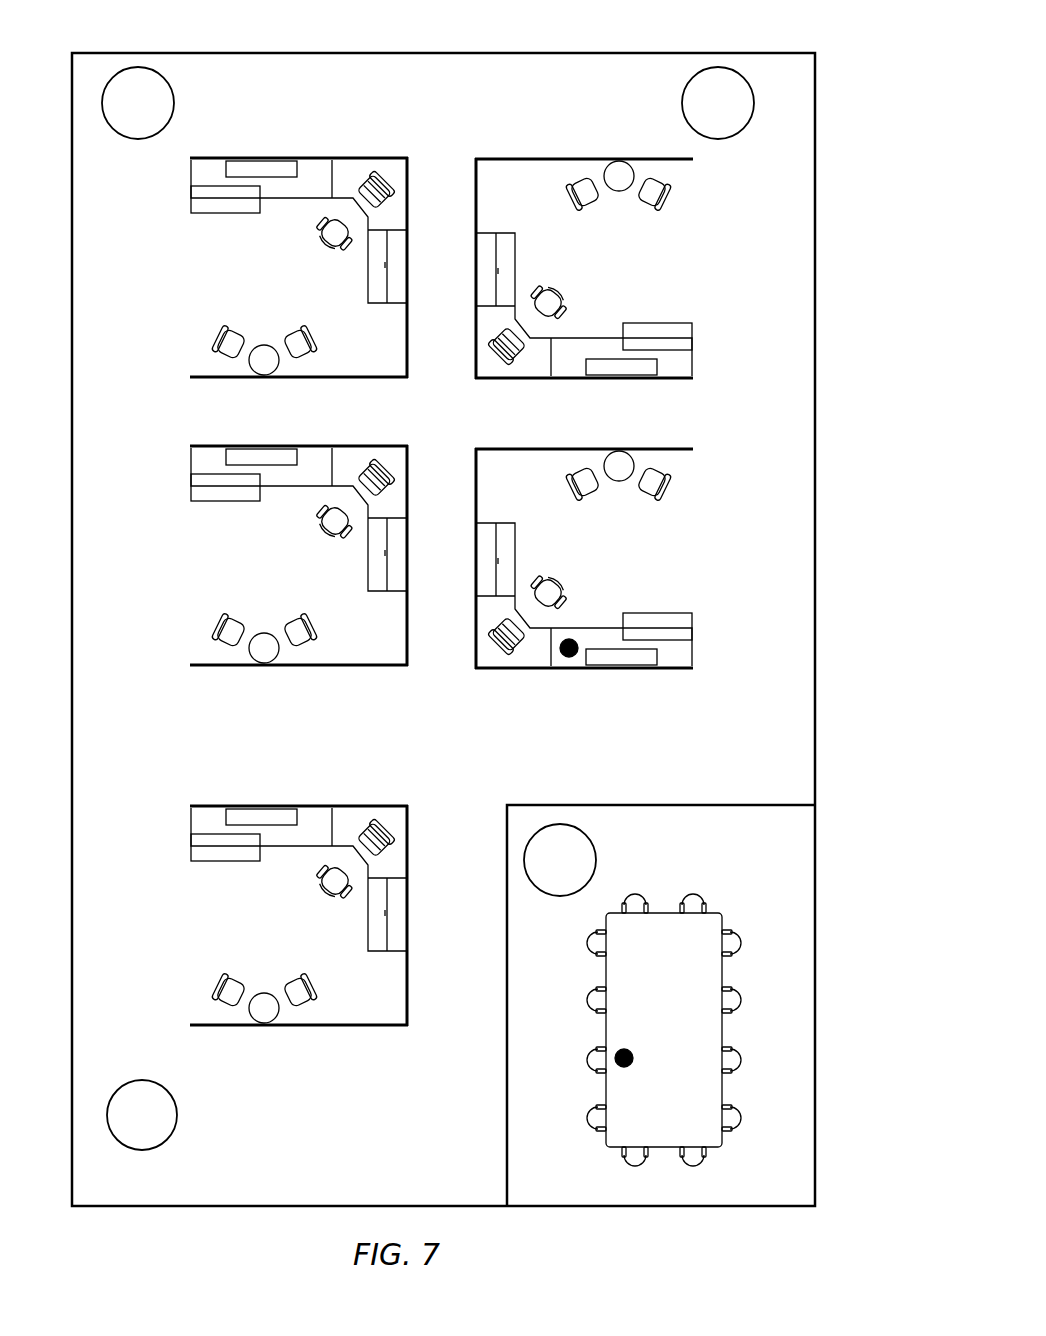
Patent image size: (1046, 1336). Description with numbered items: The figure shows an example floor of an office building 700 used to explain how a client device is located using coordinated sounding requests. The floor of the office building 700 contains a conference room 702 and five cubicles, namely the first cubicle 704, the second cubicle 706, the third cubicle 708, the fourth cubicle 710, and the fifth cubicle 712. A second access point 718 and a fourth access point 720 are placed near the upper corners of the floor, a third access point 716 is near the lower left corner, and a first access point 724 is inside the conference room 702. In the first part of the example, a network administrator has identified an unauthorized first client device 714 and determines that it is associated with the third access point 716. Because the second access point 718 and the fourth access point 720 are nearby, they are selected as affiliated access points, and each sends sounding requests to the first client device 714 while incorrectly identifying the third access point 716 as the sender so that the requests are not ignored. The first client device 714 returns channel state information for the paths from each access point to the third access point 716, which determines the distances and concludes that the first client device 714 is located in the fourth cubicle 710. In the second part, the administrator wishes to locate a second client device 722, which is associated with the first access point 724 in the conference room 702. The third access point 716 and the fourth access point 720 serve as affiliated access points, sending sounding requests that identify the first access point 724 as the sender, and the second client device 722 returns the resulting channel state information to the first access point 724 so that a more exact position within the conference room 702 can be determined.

The floor of an office building 700 is at (542, 53).
The conference room 702 is at (515, 803).
The cubicle CU1 704 is at (290, 157).
The cubicle CU2 706 is at (513, 157).
The cubicle CU3 708 is at (283, 445).
The cubicle CU4 710 is at (523, 447).
The cubicle CU5 712 is at (240, 805).
The client device D1 714 is at (568, 657).
The access point AP3 716 is at (175, 1103).
The access point AP2 718 is at (173, 112).
The access point AP4 720 is at (727, 141).
The client device D2 722 is at (624, 1049).
The access point AP1 724 is at (588, 837).